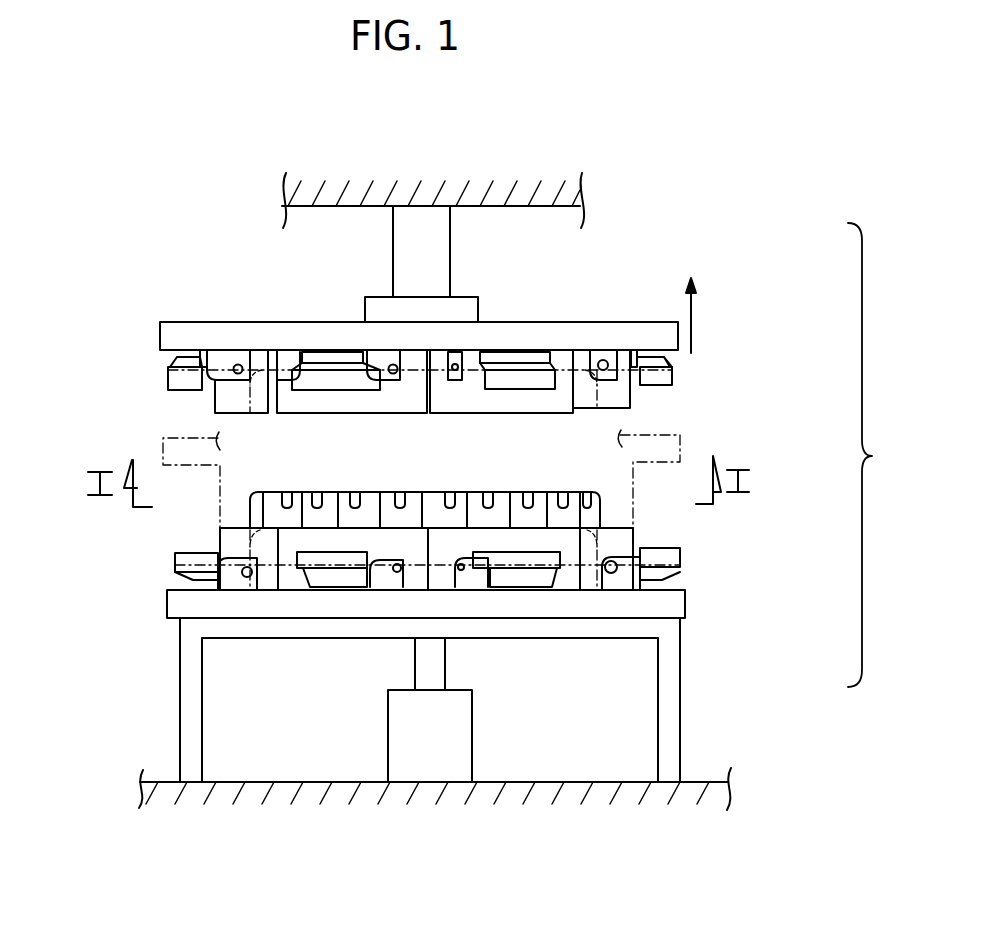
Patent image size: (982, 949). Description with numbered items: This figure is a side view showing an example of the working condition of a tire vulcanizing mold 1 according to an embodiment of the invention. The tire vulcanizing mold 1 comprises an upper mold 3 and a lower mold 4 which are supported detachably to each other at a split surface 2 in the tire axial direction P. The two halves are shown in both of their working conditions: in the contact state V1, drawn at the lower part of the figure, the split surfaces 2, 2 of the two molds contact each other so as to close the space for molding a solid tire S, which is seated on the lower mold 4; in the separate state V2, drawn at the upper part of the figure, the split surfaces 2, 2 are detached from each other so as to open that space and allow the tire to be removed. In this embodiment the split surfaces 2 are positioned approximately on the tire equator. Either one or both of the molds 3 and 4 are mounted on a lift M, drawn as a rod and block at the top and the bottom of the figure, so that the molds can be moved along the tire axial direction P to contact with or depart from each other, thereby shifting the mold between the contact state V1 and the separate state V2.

The tire vulcanizing mold 1 is at (821, 396).
The split surface 2 is at (500, 412).
The upper mold 3 is at (703, 379).
The lower mold 4 is at (693, 561).
The lift M is at (438, 254).
The tire axial direction P is at (693, 323).
The solid tire S is at (388, 500).
The contact state V1 is at (173, 512).
The separate state V2 is at (128, 337).